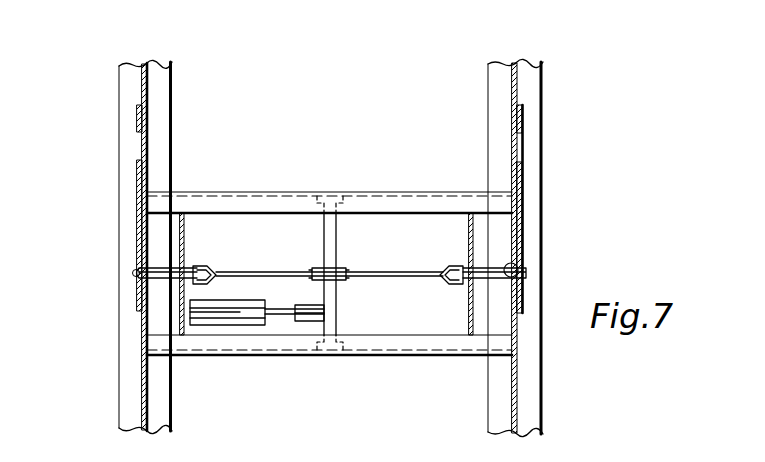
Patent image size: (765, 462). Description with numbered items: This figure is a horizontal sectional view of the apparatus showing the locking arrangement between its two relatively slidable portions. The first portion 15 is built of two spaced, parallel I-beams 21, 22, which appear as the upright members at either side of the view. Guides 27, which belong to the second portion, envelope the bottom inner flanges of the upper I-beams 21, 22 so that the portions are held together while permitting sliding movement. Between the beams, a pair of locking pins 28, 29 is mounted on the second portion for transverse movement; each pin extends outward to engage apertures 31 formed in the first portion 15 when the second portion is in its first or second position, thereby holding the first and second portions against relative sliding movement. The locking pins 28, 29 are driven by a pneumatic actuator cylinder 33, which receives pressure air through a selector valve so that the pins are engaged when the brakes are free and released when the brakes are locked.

The I-beam 21 is at (127, 93).
The I-beam 22 is at (532, 120).
The first portion 15 is at (140, 204).
The guides 27 is at (200, 344).
The locking pin 28 is at (198, 267).
The locking pin 29 is at (468, 270).
The apertures 31 is at (134, 273).
The pneumatic actuator cylinder 33 is at (243, 318).